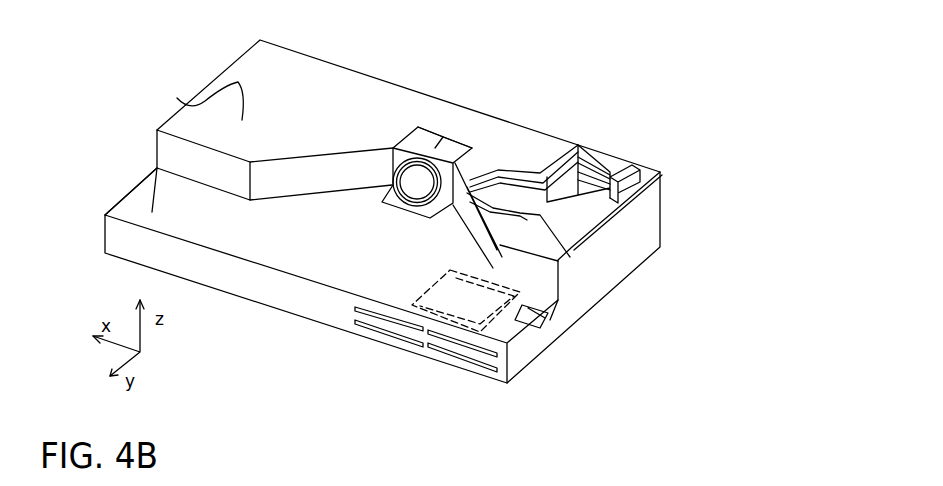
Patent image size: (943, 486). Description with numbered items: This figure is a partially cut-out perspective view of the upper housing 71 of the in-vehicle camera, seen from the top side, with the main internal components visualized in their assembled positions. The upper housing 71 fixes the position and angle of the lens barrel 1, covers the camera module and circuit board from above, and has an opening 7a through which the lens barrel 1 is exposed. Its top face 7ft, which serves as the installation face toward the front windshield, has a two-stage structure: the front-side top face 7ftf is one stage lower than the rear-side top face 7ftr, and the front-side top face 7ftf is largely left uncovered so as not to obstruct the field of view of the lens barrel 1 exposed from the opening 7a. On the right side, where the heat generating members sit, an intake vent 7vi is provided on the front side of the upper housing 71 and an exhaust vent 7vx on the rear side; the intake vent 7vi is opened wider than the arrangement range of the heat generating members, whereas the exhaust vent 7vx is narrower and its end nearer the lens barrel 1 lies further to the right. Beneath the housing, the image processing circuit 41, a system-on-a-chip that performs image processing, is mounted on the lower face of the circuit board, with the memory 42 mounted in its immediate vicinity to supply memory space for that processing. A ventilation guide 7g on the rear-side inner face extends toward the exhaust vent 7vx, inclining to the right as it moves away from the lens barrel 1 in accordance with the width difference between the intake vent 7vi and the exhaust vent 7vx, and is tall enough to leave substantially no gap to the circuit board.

The upper housing 71 is at (637, 245).
The top face 7ft is at (137, 73).
The rear-side top face 7ftr is at (186, 108).
The front-side top face 7ftf is at (137, 200).
The opening 7a is at (422, 147).
The lens barrel 1 is at (423, 168).
The exhaust vent 7vx is at (590, 157).
The ventilation guide 7g is at (617, 162).
The image processing circuit 41 is at (512, 283).
The memory 42 is at (540, 313).
The intake vent 7vi is at (443, 347).